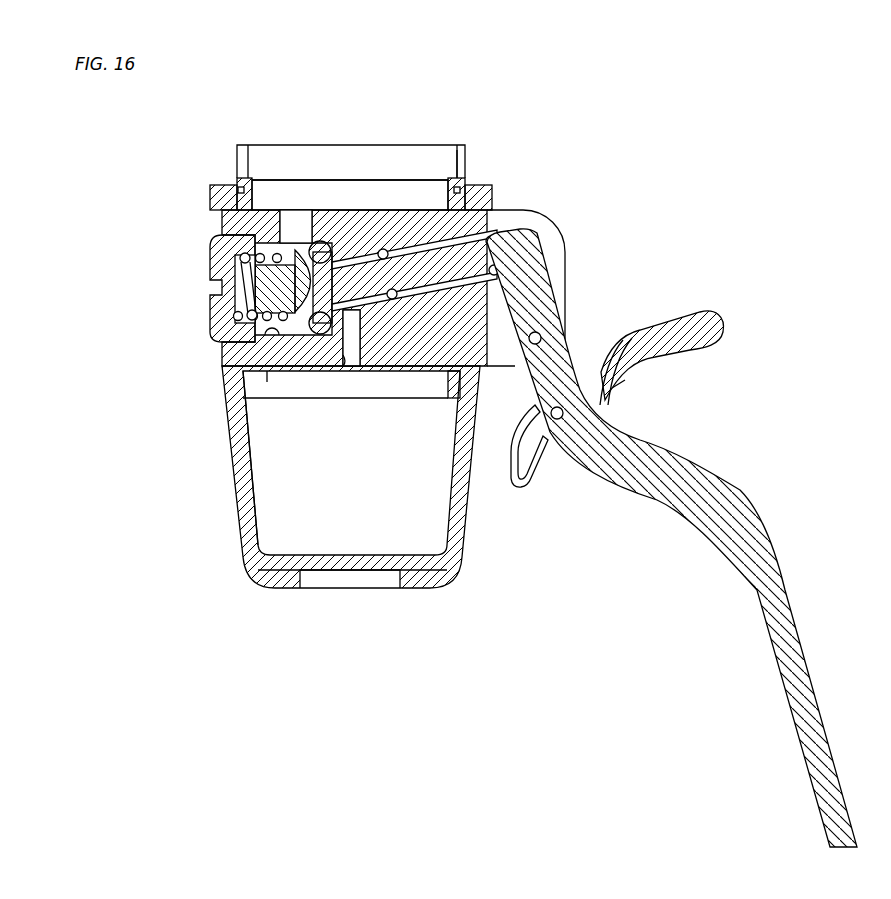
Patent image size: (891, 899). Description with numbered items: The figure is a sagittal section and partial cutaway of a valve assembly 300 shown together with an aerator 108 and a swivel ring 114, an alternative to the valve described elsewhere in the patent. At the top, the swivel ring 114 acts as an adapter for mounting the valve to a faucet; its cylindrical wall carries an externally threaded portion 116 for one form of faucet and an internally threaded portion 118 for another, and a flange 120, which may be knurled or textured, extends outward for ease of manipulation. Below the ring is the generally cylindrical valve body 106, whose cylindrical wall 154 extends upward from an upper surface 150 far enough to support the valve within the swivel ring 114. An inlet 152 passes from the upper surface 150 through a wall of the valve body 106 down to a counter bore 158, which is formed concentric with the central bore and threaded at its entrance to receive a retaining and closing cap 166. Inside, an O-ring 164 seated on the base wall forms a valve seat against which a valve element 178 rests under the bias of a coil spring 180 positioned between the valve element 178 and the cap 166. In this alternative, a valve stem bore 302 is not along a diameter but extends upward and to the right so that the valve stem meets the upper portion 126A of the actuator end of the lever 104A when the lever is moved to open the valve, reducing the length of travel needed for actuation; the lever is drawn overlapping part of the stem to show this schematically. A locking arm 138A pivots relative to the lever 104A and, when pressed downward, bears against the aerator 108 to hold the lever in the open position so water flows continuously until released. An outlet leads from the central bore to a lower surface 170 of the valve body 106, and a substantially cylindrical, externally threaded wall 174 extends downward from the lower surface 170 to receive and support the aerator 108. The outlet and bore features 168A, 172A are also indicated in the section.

The valve assembly 300 is at (134, 134).
The swivel ring 114 is at (487, 154).
The threaded portion 116 is at (237, 160).
The threaded portion 118 is at (248, 160).
The cylindrical wall 154 is at (447, 195).
The upper surface 150 is at (360, 211).
The flange 120 is at (210, 197).
The valve body 106 is at (222, 223).
The inlet 152 is at (297, 211).
The vertical passage 168A is at (352, 372).
The outlet passage 172A is at (347, 358).
The valve stem bore 302 is at (345, 262).
The O-ring 164 is at (300, 338).
The retaining and closing cap 166 is at (213, 341).
The coil spring 180 is at (222, 288).
The valve element 178 is at (250, 300).
The aerator 108 is at (232, 497).
The cylindrical wall 174 is at (237, 427).
The counter bore 158 is at (232, 368).
The lower surface 170 is at (270, 373).
The locking arm 138A is at (712, 350).
The upper portion of the actuator end 126A is at (542, 234).
The lever 104A is at (787, 555).